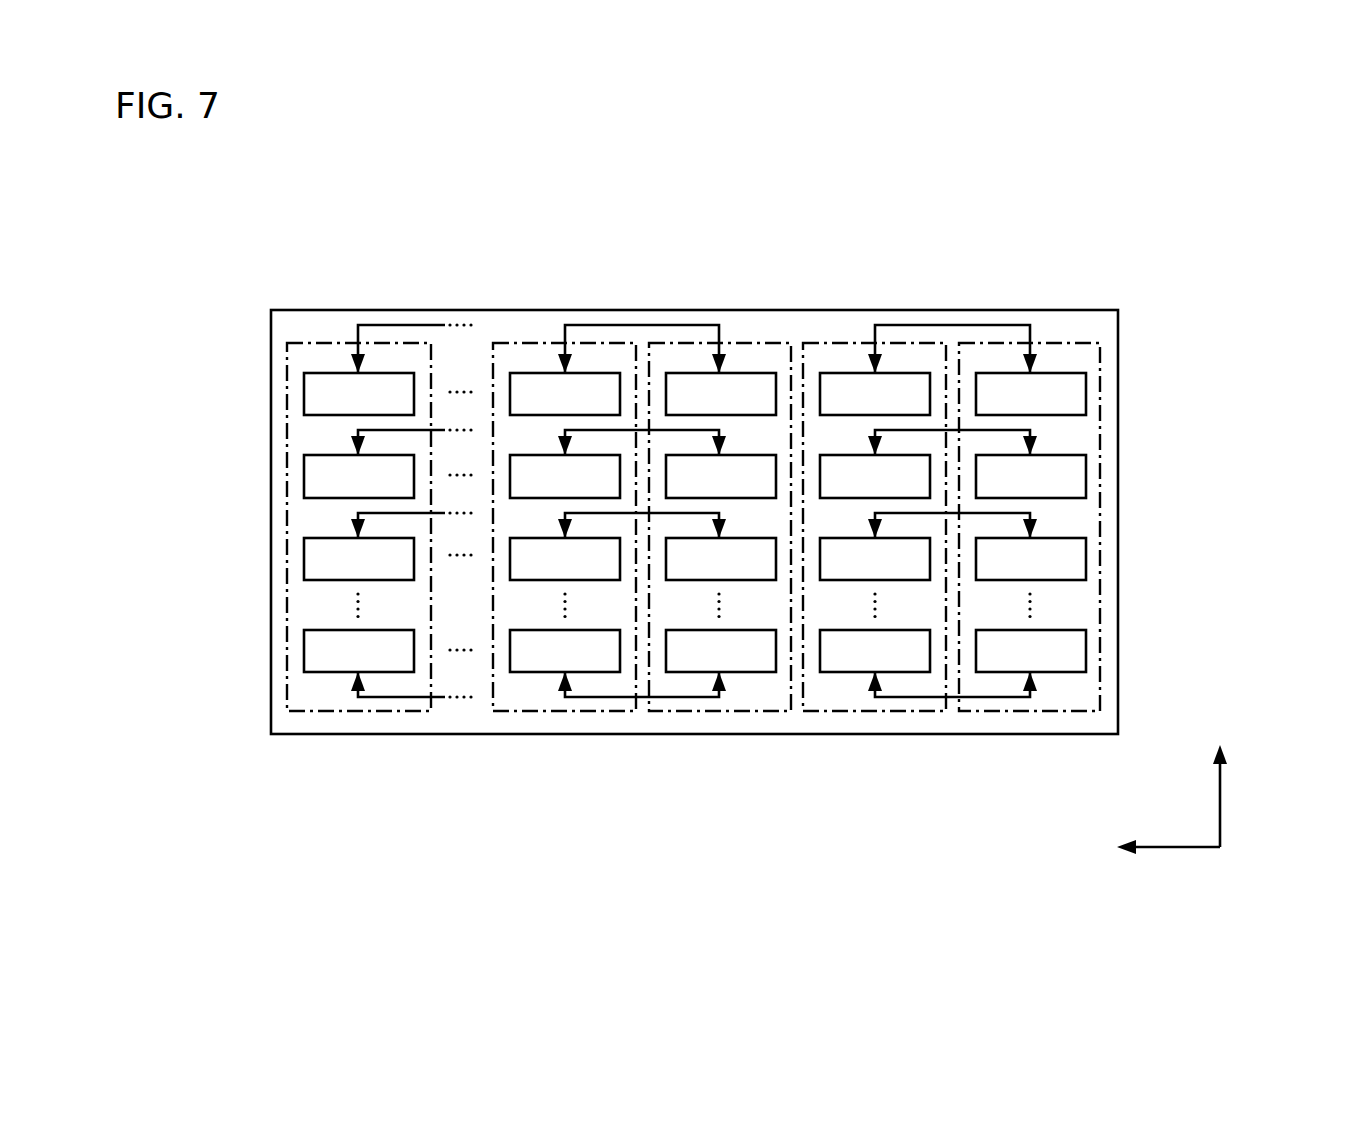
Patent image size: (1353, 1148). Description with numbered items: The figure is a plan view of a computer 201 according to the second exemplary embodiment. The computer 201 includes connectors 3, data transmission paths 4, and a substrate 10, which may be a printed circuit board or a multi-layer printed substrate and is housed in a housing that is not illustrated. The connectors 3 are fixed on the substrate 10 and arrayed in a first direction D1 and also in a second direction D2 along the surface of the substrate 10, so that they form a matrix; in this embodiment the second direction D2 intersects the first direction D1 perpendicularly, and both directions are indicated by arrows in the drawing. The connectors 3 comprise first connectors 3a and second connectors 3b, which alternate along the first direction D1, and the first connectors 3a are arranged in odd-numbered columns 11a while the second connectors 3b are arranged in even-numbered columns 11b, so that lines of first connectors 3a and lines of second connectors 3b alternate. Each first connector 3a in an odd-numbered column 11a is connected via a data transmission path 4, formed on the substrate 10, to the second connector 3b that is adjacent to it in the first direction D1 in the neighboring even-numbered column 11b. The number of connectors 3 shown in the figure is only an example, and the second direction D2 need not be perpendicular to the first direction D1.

The computer 201 is at (710, 459).
The substrate 10 is at (1089, 308).
The odd-numbered column 11a is at (680, 343).
The even-numbered column 11b is at (297, 340).
The connector 3 is at (710, 525).
The first connector 3a is at (735, 470).
The second connector 3b is at (330, 390).
The data transmission path 4 is at (400, 322).
The first direction D1 is at (1175, 848).
The second direction D2 is at (1220, 793).